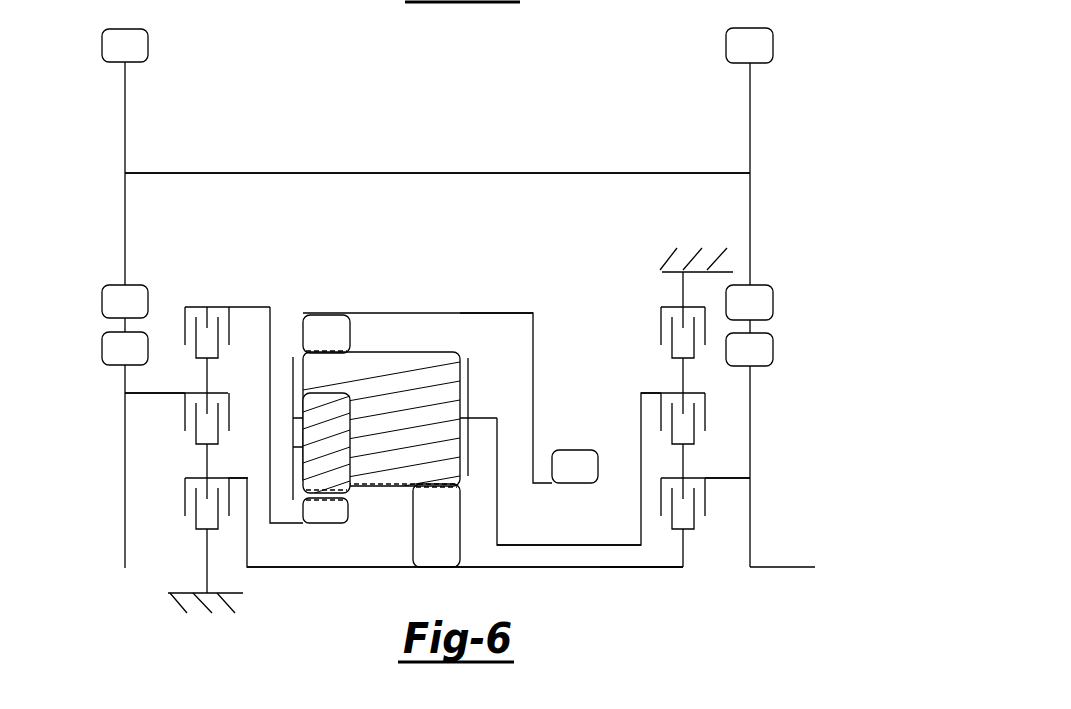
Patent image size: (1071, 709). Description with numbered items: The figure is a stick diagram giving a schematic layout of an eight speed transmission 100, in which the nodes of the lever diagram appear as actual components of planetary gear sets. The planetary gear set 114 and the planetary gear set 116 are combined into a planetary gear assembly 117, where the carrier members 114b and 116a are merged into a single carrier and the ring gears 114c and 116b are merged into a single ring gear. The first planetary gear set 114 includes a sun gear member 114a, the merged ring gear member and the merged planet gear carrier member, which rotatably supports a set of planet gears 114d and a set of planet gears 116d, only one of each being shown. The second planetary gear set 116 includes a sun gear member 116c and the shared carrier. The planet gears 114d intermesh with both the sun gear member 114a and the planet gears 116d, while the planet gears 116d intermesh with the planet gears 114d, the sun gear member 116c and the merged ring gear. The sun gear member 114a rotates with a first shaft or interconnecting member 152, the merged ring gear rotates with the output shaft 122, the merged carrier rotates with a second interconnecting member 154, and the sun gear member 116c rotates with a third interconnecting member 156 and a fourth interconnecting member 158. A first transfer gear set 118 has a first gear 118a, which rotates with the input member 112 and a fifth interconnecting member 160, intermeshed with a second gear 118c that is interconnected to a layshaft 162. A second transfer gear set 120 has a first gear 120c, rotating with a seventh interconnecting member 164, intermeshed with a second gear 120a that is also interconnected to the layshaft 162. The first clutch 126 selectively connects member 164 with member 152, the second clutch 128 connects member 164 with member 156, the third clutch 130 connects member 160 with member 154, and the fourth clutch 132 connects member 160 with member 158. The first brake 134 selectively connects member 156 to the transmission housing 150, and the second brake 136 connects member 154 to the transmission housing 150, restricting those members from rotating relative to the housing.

The eight speed transmission 100 is at (790, 33).
The input member 112 is at (802, 565).
The first planetary gear set 114 is at (319, 374).
The sun gear member 114a is at (325, 515).
The planet gear carrier member 114b is at (492, 325).
The ring gear member 114c is at (320, 311).
The planet gears 114d is at (337, 487).
The second planetary gear set 116 is at (447, 446).
The planet gear carrier member 116a is at (478, 368).
The ring gear member 116b is at (325, 315).
The sun gear member 116c is at (432, 575).
The planet gears 116d is at (412, 375).
The planetary gear assembly 117 is at (390, 389).
The first transfer gear or co-planar gear set 118 is at (784, 328).
The first gear 118a is at (750, 405).
The second gear 118c is at (750, 200).
The second transfer gear or co-planar gear set 120 is at (97, 328).
The second gear 120a is at (125, 113).
The first gear 120c is at (125, 457).
The output shaft 122 is at (533, 340).
The first clutch 126 is at (185, 325).
The second clutch 128 is at (185, 418).
The third clutch 130 is at (705, 417).
The fourth clutch 132 is at (705, 497).
The first brake 134 is at (185, 498).
The second brake 136 is at (661, 325).
The transmission housing 150 is at (172, 598).
The first shaft or interconnecting member 152 is at (240, 305).
The second shaft or interconnecting member 154 is at (568, 547).
The third shaft or interconnecting member 156 is at (290, 567).
The fourth shaft or interconnecting member 158 is at (655, 567).
The fifth shaft or interconnecting member 160 is at (730, 477).
The layshaft 162 is at (412, 173).
The seventh shaft or interconnecting member 164 is at (138, 393).